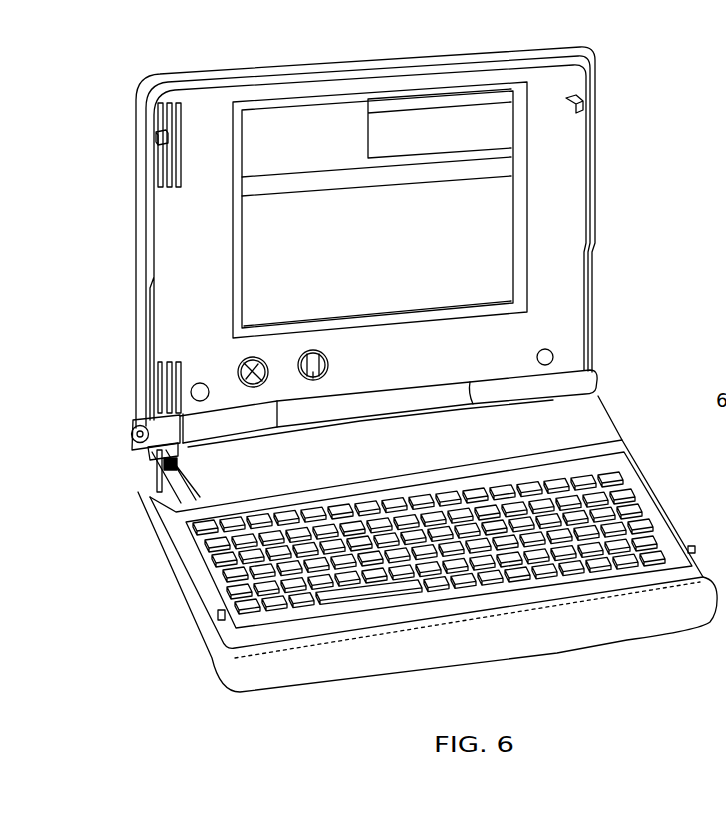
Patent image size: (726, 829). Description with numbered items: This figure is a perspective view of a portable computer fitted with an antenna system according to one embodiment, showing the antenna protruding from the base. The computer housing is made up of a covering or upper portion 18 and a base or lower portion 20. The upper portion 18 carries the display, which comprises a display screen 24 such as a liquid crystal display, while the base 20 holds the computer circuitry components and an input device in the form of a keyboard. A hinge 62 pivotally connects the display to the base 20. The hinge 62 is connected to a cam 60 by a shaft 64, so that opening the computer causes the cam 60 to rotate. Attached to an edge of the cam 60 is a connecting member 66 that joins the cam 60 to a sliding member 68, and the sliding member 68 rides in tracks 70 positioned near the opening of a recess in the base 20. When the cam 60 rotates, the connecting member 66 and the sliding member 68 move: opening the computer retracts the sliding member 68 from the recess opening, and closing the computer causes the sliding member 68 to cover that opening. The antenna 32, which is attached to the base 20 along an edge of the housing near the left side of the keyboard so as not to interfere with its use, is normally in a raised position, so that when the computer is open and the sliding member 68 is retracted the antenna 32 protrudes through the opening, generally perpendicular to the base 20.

The upper portion 18 is at (406, 237).
The display screen 24 is at (480, 228).
The base 20 is at (657, 500).
The hinge 62 is at (237, 417).
The shaft 64 is at (165, 417).
The cam 60 is at (140, 426).
The connecting member 66 is at (143, 446).
The sliding member 68 is at (165, 461).
The tracks 70 is at (163, 491).
The antenna 32 is at (163, 504).